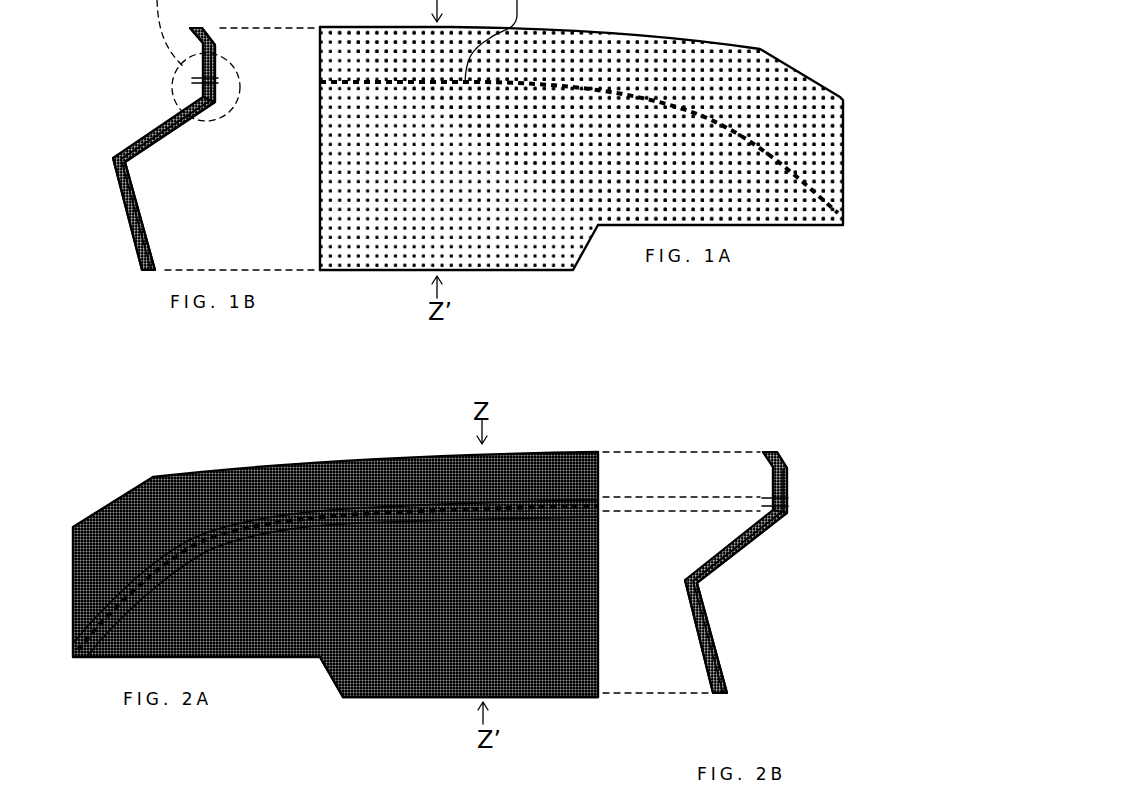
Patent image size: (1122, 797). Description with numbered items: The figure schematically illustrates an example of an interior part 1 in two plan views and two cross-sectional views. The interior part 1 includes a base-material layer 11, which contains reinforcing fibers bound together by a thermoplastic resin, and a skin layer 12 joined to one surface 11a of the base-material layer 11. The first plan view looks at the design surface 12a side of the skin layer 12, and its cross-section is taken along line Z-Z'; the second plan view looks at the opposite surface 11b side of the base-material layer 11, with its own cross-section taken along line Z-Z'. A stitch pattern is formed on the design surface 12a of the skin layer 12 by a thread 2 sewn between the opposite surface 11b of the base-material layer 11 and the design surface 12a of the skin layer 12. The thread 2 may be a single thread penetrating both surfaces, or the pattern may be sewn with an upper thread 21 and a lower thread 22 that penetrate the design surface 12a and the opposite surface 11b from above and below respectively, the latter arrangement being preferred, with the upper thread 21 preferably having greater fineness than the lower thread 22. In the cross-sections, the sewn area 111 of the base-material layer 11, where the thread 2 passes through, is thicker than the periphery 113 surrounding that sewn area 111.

In FIG. 1A, the interior part 1 is at (716, 24).
In FIG. 2A, the interior part 1 is at (207, 455).
In FIG. 1A, the thread 2 is at (579, 106).
In FIG. 1B, the thread 2 is at (219, 82).
In FIG. 2A, the thread 2 is at (335, 530).
In FIG. 2B, the thread 2 is at (788, 503).
In FIG. 1A, the upper thread 21 is at (534, 83).
In FIG. 2A, the lower thread 22 is at (333, 508).
In FIG. 1B, the base-material layer 11 is at (143, 254).
In FIG. 2B, the base-material layer 11 is at (710, 678).
In FIG. 1B, the one surface 11a is at (124, 222).
In FIG. 2A, the opposite surface 11b is at (393, 682).
In FIG. 2B, the opposite surface 11b is at (707, 647).
In FIG. 1B, the skin layer 12 is at (137, 205).
In FIG. 2B, the skin layer 12 is at (710, 617).
In FIG. 1A, the design surface 12a is at (525, 254).
In FIG. 1B, the design surface 12a is at (146, 226).
In FIG. 2B, the design surface 12a is at (718, 642).
In FIG. 1B, the sewn area 111 is at (196, 92).
In FIG. 2A, the sewn area 111 is at (503, 499).
In FIG. 2B, the sewn area 111 is at (767, 495).
In FIG. 2A, the periphery 113 is at (552, 673).